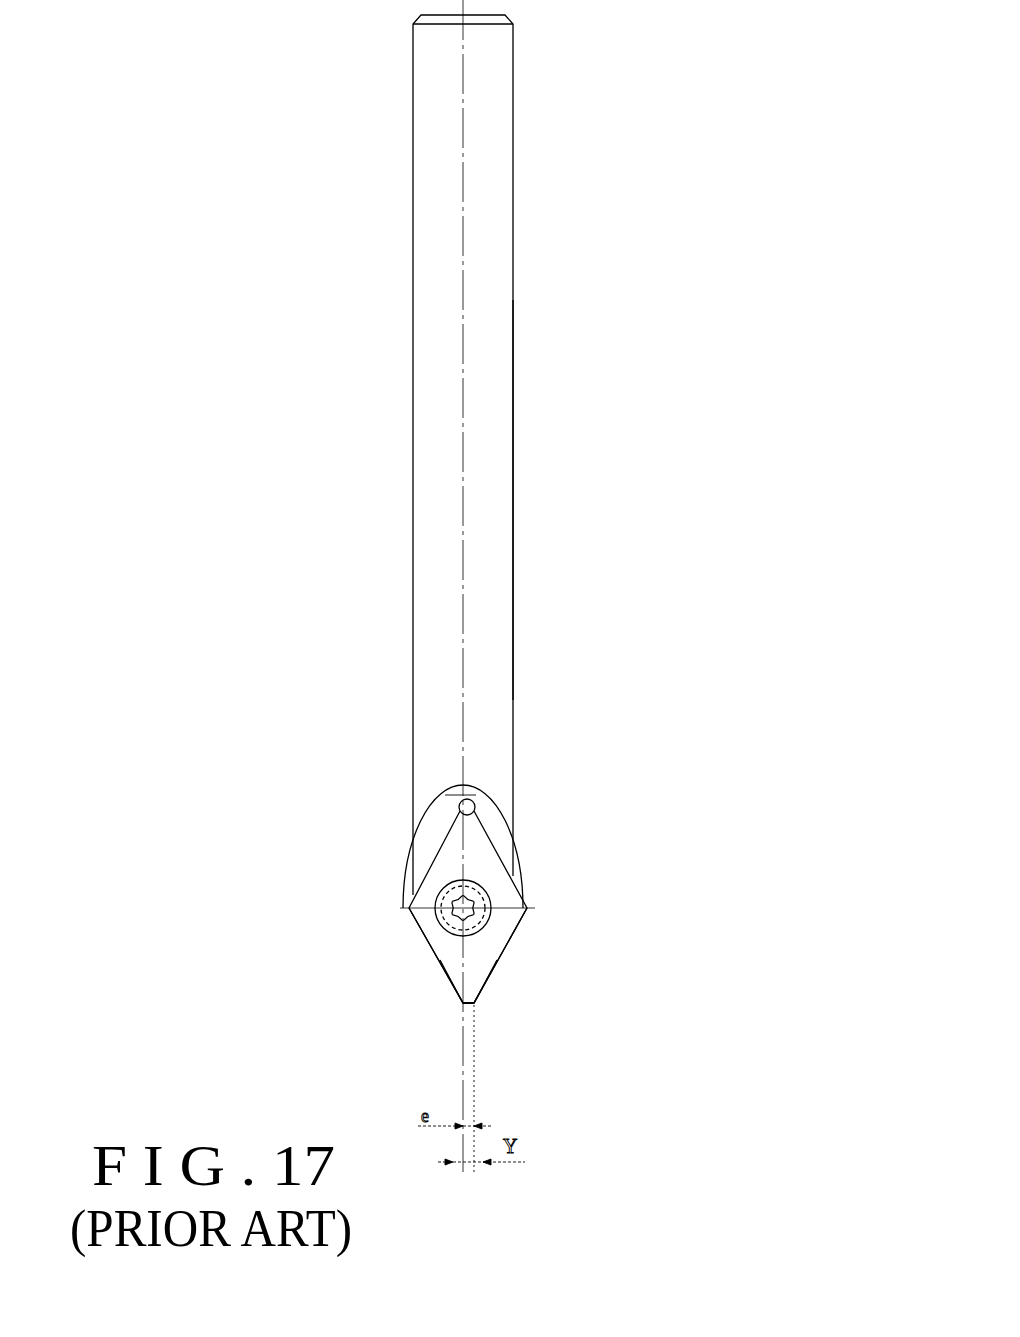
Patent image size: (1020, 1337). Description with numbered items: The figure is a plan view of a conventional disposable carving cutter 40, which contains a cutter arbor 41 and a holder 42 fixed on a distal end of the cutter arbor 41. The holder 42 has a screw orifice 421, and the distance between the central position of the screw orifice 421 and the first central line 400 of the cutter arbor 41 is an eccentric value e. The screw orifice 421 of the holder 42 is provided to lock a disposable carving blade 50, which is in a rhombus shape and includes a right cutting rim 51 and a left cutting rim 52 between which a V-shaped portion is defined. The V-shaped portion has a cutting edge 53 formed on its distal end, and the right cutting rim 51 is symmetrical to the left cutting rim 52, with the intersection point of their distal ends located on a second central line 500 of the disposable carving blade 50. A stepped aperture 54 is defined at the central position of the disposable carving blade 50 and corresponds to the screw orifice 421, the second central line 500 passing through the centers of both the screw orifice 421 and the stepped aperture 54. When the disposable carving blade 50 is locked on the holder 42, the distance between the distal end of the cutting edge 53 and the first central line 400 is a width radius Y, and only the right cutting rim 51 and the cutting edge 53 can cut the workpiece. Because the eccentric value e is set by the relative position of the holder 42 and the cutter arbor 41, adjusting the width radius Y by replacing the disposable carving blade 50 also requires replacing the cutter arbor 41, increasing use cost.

The disposable carving cutter 40 is at (413, 358).
The cutter arbor 41 is at (497, 578).
The first central line 400 is at (463, 625).
The holder 42 is at (437, 852).
The screw orifice 421 is at (490, 905).
The disposable carving blade 50 is at (497, 880).
The second central line 500 is at (465, 955).
The right cutting rim 51 is at (498, 965).
The left cutting rim 52 is at (432, 940).
The cutting edge 53 is at (473, 1007).
The stepped aperture 54 is at (440, 905).